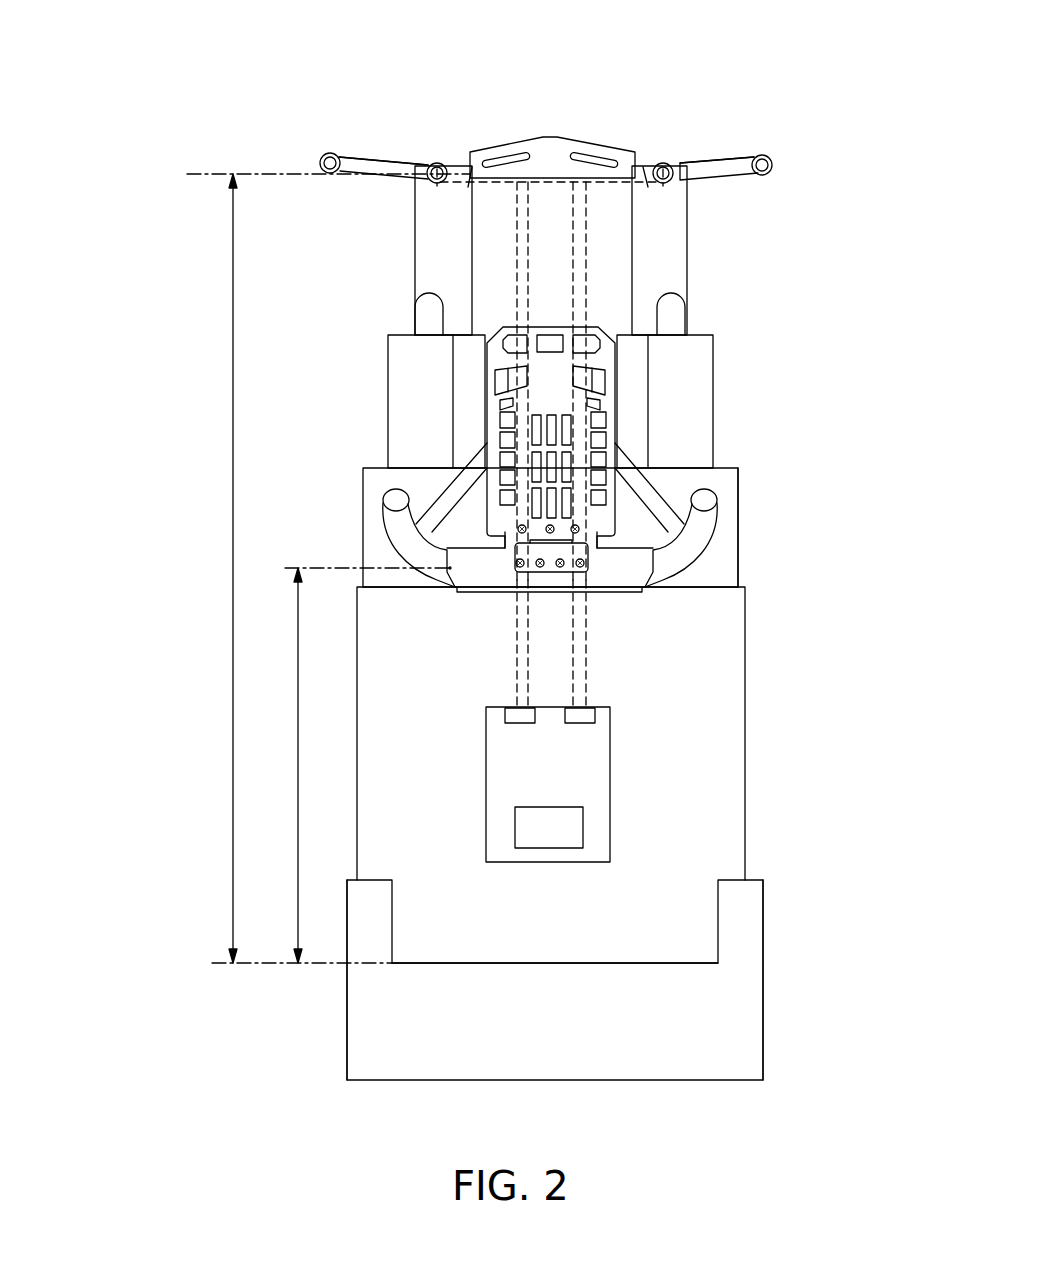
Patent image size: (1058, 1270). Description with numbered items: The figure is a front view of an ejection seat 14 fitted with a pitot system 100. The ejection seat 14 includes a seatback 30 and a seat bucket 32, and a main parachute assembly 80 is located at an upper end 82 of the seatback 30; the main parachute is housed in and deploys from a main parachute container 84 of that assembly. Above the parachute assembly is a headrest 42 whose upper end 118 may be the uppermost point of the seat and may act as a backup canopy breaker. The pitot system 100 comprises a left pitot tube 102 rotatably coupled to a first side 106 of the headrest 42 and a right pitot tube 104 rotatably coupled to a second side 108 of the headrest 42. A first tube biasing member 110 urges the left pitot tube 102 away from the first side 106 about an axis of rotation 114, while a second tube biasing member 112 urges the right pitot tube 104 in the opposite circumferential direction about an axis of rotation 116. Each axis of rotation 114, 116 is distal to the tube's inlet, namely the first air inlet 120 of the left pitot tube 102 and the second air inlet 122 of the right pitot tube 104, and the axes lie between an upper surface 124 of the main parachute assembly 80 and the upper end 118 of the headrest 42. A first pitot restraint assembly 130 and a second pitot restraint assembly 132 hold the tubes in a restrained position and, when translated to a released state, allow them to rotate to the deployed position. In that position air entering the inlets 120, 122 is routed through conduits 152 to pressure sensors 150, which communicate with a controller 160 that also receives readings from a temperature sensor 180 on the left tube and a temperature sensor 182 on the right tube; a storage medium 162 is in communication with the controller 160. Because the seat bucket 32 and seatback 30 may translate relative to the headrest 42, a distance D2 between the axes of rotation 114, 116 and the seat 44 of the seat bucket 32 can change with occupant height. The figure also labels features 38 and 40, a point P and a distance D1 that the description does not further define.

The ejection seat 14 is at (757, 88).
The seatback 30 is at (407, 686).
The seat bucket 32 is at (540, 1046).
The base side wall 38 is at (763, 1043).
The base side wall 40 is at (347, 1043).
The headrest 42 is at (563, 242).
The seat 44 is at (535, 963).
The main parachute assembly 80 is at (728, 498).
The upper end 82 is at (725, 583).
The main parachute container 84 is at (693, 419).
The pitot system 100 is at (450, 132).
The left pitot tube 102 is at (722, 174).
The right pitot tube 104 is at (386, 165).
The first side 106 is at (835, 160).
The second side 108 is at (185, 146).
The first tube biasing member 110 is at (656, 165).
The second tube biasing member 112 is at (434, 162).
The axis of rotation 114 is at (665, 182).
The axis of rotation 116 is at (436, 181).
The upper end 118 is at (553, 135).
The first air inlet 120 is at (772, 172).
The second air inlet 122 is at (320, 162).
The upper surface 124 is at (400, 332).
The first pitot restraint assembly 130 is at (696, 312).
The second pitot restraint assembly 132 is at (405, 302).
The pressure sensors 150 is at (510, 715).
The conduits 152 is at (517, 619).
The controller 160 is at (564, 769).
The storage medium 162 is at (566, 842).
The temperature sensor 180 is at (740, 162).
The temperature sensor 182 is at (347, 157).
The pivot point P is at (450, 568).
The first distance D1 is at (367, 765).
The distance D2 is at (328, 568).